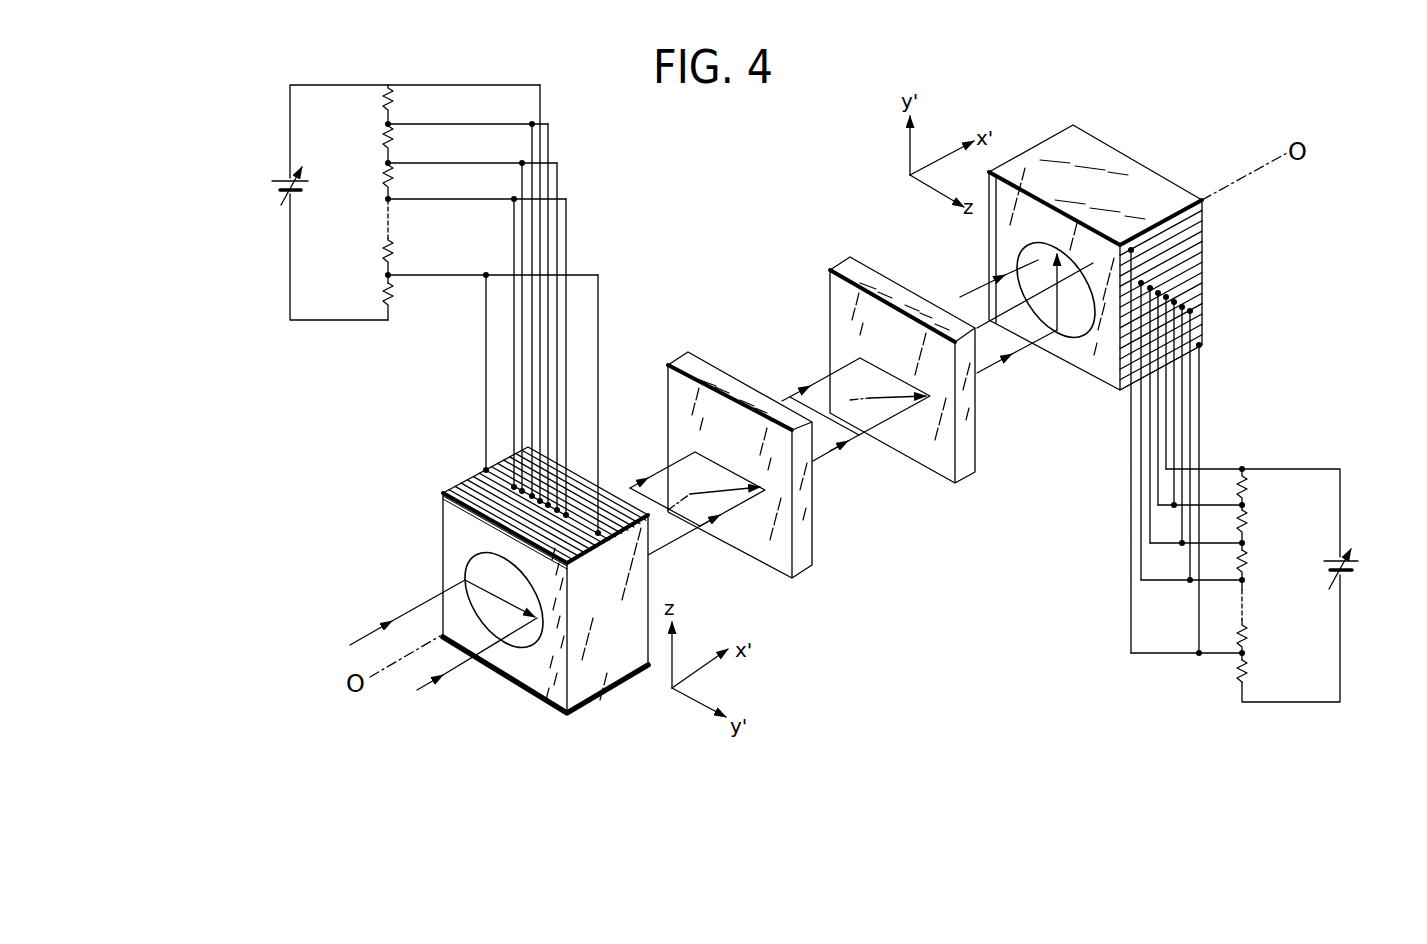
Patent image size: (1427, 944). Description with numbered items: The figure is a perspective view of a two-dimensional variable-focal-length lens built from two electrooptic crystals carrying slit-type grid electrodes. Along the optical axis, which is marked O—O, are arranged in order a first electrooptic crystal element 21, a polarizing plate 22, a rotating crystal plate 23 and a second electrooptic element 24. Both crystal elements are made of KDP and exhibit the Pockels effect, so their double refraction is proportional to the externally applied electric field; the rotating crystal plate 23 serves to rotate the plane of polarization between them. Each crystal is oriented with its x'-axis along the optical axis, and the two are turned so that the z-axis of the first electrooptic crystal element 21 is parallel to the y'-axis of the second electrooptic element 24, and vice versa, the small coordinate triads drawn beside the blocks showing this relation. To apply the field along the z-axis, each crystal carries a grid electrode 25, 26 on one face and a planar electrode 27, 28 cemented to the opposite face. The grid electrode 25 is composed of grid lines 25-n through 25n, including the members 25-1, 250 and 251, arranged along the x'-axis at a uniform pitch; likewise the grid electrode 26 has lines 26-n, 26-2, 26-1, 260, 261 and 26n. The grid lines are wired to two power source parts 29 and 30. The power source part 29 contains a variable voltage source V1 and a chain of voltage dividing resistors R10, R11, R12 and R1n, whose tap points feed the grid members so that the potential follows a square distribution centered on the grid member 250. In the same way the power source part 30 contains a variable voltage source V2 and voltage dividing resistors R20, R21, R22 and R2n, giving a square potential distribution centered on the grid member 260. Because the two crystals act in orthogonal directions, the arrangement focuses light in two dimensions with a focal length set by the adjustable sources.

The first electrooptic crystal element 21 is at (603, 681).
The polarizing plate 22 is at (703, 367).
The rotating crystal plate 23 is at (867, 278).
The second electrooptic element 24 is at (1112, 157).
The grid electrode 25 is at (468, 492).
The grid line 25-1 is at (497, 510).
The grid line 25-n is at (484, 470).
The grid line 25n is at (622, 498).
The grid member 250 is at (513, 524).
The grid line 251 is at (480, 536).
The grid electrode 26 is at (1187, 226).
The grid line 26n is at (1200, 215).
The grid line 261 is at (1187, 272).
The grid member 260 is at (1190, 280).
The grid line 26-1 is at (1193, 293).
The grid line 26-2 is at (1193, 307).
The grid line 26-n is at (1200, 347).
The planar electrode 27 is at (537, 703).
The planar electrode 28 is at (995, 252).
The power source part 29 is at (350, 323).
The power source part 30 is at (1305, 466).
The voltage dividing resistor R10 is at (387, 102).
The voltage dividing resistor R11 is at (387, 139).
The voltage dividing resistor R12 is at (387, 175).
The voltage dividing resistor R1n is at (388, 293).
The voltage dividing resistor R20 is at (1250, 490).
The voltage dividing resistor R21 is at (1250, 527).
The voltage dividing resistor R22 is at (1250, 567).
The voltage dividing resistor R2n is at (1250, 669).
The variable voltage source V1 is at (273, 191).
The variable voltage source V2 is at (1357, 569).